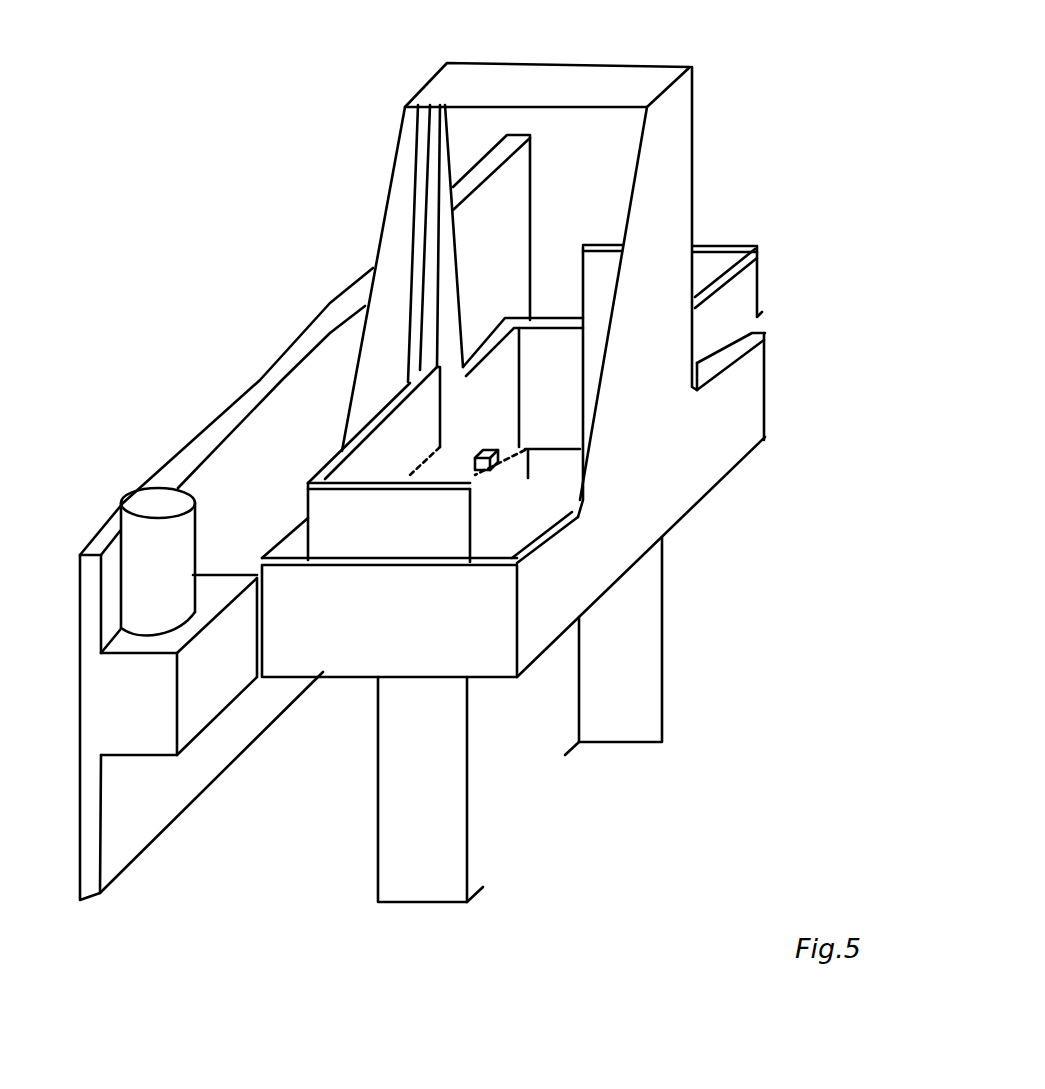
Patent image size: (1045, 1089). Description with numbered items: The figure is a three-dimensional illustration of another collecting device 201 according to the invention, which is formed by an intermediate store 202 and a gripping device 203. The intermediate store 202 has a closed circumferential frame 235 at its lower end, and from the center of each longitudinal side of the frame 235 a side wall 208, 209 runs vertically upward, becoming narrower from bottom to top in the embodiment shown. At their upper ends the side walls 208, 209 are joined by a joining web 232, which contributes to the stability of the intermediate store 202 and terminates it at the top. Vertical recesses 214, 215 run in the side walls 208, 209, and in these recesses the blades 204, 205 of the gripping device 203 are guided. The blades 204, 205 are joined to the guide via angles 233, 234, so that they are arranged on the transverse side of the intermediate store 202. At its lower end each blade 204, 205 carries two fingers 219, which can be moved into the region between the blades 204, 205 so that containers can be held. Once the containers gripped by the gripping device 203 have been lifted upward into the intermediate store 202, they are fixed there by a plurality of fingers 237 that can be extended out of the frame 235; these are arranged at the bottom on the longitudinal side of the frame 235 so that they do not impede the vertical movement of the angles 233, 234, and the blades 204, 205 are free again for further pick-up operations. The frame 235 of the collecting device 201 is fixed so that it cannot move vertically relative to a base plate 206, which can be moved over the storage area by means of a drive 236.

The collecting device 201 is at (765, 191).
The intermediate store 202 is at (480, 281).
The gripping device 203 is at (710, 631).
The blade 204 is at (645, 715).
The blade 205 is at (413, 878).
The base plate 206 is at (253, 440).
The side wall 208 is at (672, 245).
The side wall 209 is at (402, 215).
The vertical recess 214 is at (634, 185).
The vertical recess 215 is at (430, 162).
The finger 219 is at (640, 757).
The joining web 232 is at (563, 83).
The angle 233 is at (740, 295).
The angle 234 is at (343, 520).
The frame 235 is at (480, 663).
The drive 236 is at (150, 712).
The finger 237 is at (496, 466).